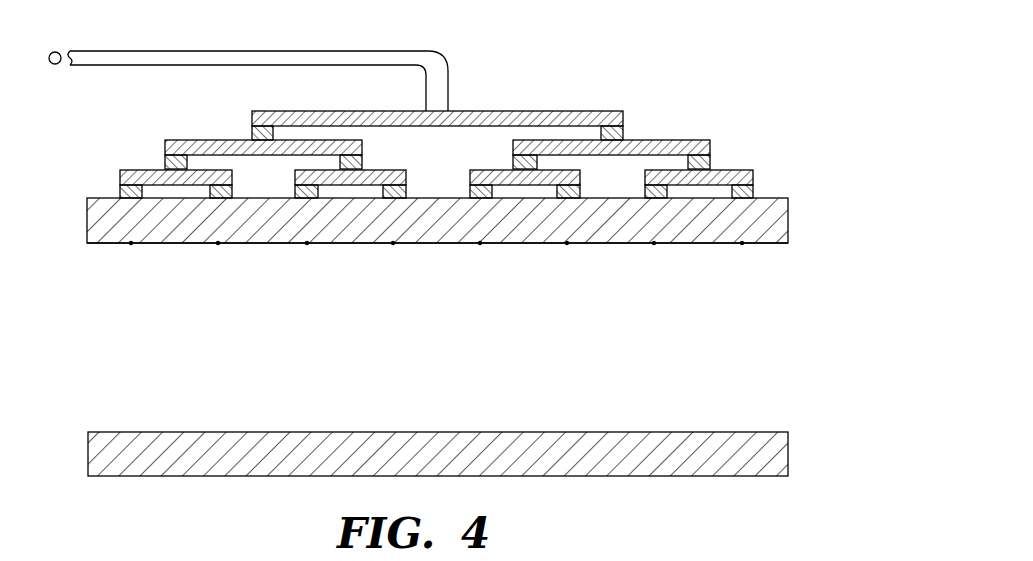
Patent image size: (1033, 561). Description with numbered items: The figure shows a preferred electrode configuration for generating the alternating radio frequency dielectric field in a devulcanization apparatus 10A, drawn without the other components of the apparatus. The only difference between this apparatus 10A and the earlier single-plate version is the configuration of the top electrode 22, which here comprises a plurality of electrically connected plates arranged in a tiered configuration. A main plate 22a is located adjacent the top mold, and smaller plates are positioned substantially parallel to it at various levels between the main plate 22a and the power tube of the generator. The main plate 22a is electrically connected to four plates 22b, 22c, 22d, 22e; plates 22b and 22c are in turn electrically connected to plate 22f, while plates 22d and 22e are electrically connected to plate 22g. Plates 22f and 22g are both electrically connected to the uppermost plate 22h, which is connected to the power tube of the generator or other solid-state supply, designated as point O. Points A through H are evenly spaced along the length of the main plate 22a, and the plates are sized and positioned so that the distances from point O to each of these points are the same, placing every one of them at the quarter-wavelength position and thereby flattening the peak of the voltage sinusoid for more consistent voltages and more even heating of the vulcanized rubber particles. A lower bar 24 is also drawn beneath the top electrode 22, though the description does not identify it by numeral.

The apparatus 10A is at (430, 157).
The top electrode 22 is at (794, 198).
The main plate 22a is at (107, 243).
The plate 22b is at (142, 170).
The plate 22c is at (388, 170).
The plate 22d is at (489, 170).
The plate 22e is at (734, 170).
The plate 22f is at (200, 140).
The plate 22g is at (679, 140).
The plate 22h is at (509, 111).
The base plate 24 is at (794, 434).